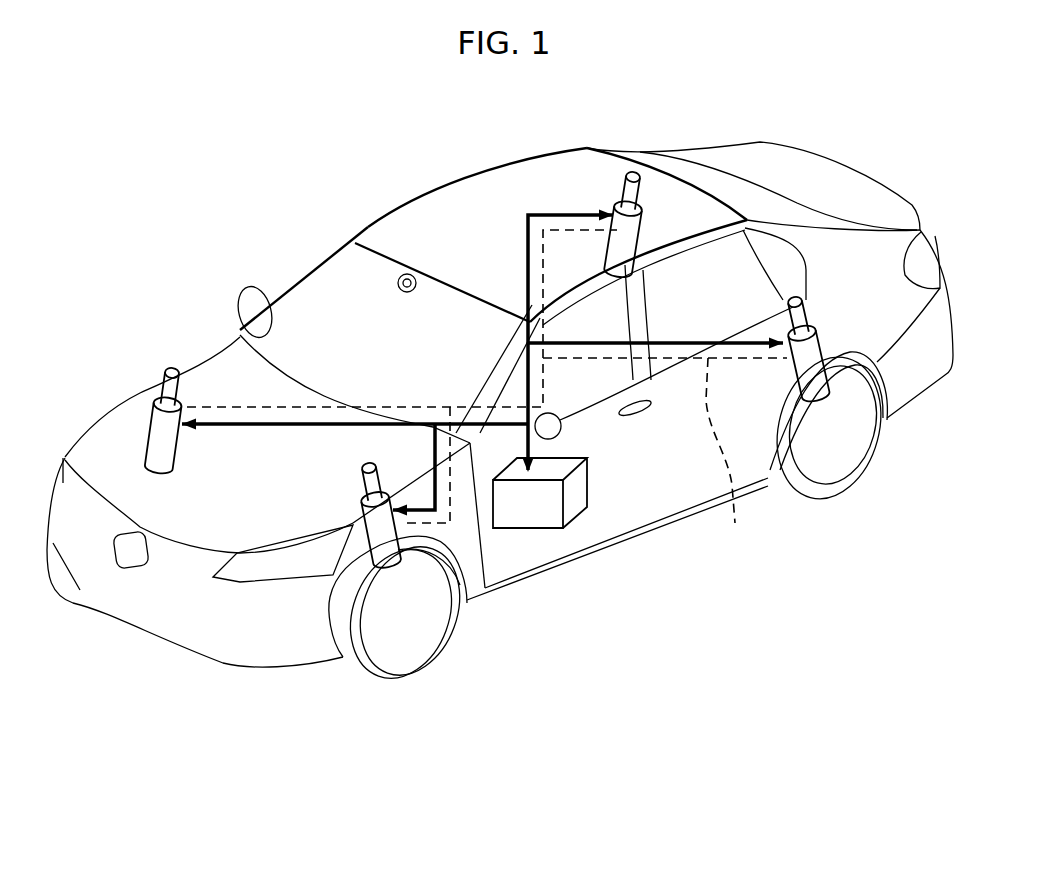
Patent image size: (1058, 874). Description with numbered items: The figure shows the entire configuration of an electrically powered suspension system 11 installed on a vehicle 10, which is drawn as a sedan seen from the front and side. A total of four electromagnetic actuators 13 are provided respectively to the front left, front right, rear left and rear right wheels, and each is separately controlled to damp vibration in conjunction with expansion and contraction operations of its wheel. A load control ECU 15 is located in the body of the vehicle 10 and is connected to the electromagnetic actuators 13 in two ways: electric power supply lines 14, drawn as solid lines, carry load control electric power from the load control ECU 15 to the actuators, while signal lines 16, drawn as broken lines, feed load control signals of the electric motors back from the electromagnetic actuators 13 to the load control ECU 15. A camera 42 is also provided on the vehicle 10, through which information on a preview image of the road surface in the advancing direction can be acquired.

The vehicle 10 is at (465, 178).
The electrically powered suspension system 11 is at (455, 365).
The electromagnetic actuator 13 is at (655, 222).
The electric power supply line 14 is at (597, 373).
The load control ECU 15 is at (530, 530).
The signal line 16 is at (729, 460).
The camera 42 is at (412, 280).